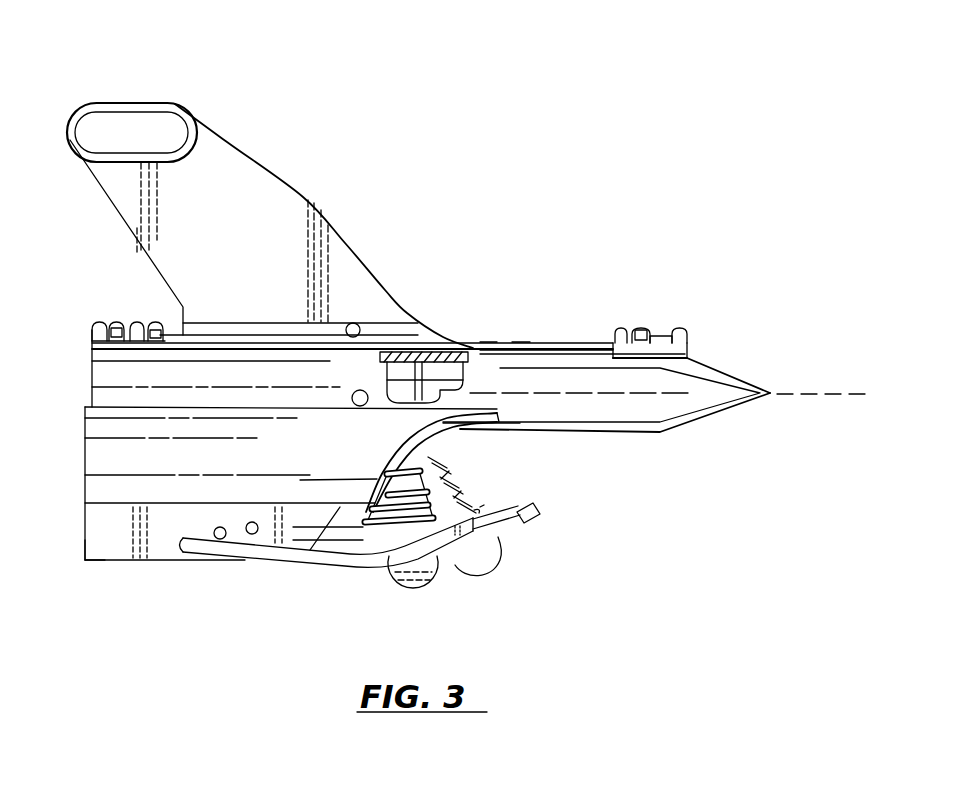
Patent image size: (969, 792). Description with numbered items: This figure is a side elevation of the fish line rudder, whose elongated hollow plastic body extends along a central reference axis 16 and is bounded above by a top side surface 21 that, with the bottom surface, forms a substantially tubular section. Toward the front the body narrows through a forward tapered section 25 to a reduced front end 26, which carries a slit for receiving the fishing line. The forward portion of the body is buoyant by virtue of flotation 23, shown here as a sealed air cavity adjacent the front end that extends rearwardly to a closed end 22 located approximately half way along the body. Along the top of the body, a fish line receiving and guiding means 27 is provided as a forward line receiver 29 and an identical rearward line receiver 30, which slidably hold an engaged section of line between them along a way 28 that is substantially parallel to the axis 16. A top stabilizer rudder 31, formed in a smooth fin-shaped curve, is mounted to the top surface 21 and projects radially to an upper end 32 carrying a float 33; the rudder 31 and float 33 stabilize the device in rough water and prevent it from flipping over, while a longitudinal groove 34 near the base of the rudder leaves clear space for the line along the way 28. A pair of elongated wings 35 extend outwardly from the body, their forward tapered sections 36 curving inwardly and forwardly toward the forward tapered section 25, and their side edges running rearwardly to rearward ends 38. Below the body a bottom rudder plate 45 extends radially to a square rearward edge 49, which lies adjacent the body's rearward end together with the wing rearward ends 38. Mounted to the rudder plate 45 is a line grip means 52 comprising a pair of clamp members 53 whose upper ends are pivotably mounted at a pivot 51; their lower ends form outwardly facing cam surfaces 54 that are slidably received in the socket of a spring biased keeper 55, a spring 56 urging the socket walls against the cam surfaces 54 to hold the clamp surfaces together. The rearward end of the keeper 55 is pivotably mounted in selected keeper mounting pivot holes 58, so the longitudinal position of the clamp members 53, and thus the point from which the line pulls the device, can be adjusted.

The central reference axis 16 is at (830, 393).
The top side surface 21 is at (573, 380).
The closed end 22 is at (405, 378).
The flotation 23 is at (443, 377).
The forward tapered section 25 is at (728, 392).
The reduced front end 26 is at (770, 397).
The fish line receiving and guiding means 27 is at (693, 340).
The way 28 is at (533, 338).
The forward line receiver 29 is at (657, 337).
The rearward line receiver 30 is at (112, 320).
The top stabilizer rudder 31 is at (307, 195).
The upper end 32 is at (227, 160).
The float 33 is at (138, 137).
The longitudinal groove 34 is at (360, 322).
The elongated wings 35 is at (118, 452).
The forward tapered sections 36 is at (473, 437).
The rearward ends 38 is at (82, 428).
The bottom rudder plate 45 is at (167, 540).
The square rearward edge 49 is at (82, 545).
The pivot 51 is at (352, 400).
The line grip means 52 is at (434, 599).
The clamp members 53 is at (403, 588).
The cam surfaces 54 is at (442, 568).
The spring biased keeper 55 is at (497, 528).
The spring 56 is at (437, 510).
The keeper mounting pivot holes 58 is at (222, 540).